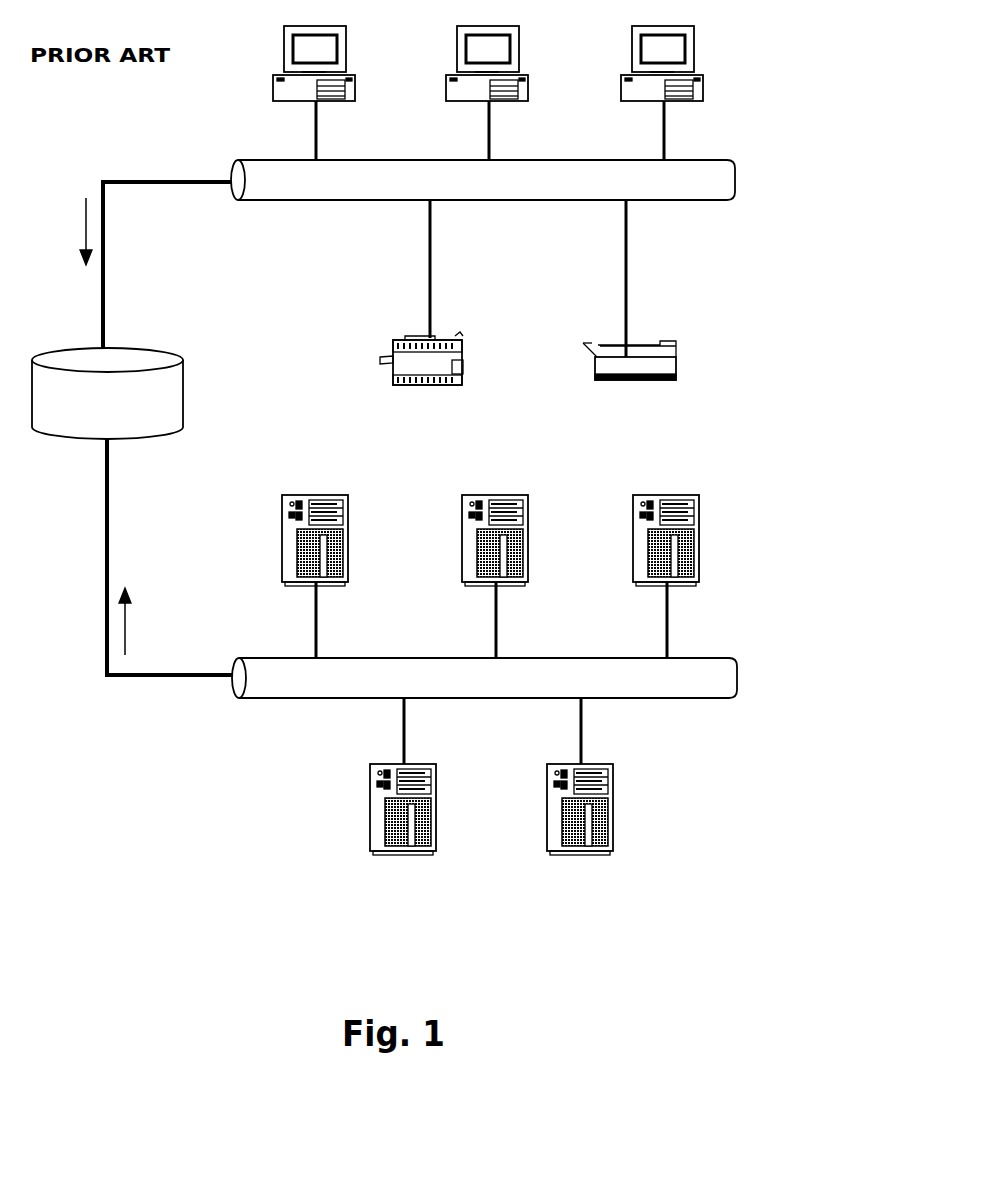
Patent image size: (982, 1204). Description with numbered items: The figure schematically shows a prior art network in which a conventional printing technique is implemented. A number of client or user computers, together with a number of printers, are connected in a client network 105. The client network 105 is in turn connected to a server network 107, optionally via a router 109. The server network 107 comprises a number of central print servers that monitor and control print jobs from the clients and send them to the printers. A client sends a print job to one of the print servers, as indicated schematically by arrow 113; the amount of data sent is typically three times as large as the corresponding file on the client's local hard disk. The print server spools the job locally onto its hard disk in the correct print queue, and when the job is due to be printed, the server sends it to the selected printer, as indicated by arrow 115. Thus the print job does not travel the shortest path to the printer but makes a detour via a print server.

The client network 105 is at (521, 180).
The server network 107 is at (521, 677).
The router 109 is at (145, 428).
The arrow 113 is at (55, 231).
The arrow 115 is at (159, 621).